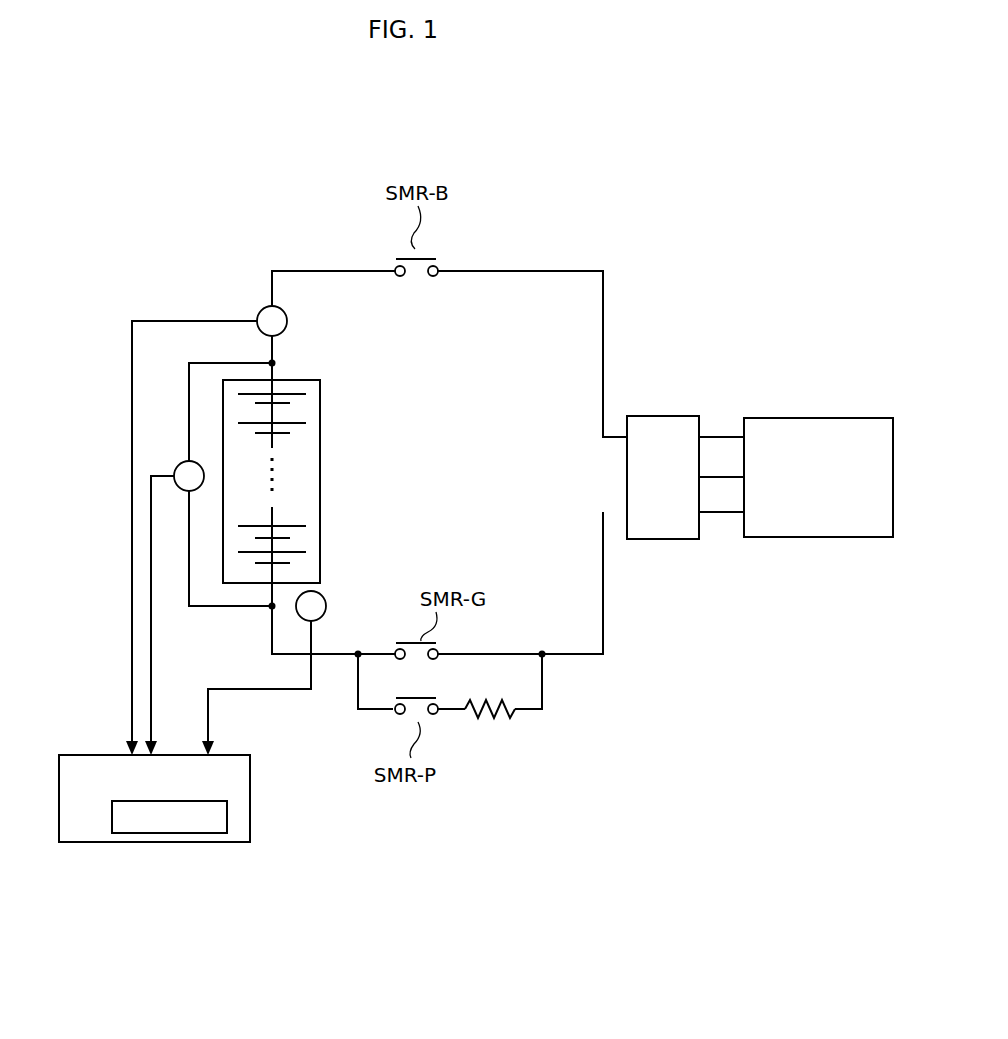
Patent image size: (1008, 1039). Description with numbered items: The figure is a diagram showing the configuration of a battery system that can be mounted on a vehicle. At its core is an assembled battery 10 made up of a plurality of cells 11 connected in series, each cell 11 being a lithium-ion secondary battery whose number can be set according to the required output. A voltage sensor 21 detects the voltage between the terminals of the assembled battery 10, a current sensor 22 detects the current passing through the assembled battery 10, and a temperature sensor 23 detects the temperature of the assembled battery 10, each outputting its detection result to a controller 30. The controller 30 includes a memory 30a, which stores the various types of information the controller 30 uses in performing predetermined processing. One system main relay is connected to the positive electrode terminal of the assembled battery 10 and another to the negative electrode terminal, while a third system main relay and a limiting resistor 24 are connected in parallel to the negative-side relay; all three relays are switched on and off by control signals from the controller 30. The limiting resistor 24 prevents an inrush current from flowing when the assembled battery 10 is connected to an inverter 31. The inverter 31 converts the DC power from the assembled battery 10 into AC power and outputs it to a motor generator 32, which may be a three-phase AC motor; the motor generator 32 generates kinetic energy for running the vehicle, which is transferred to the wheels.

The assembled battery 10 is at (320, 475).
The cell 11 is at (303, 400).
The voltage sensor 21 is at (178, 463).
The current sensor 22 is at (259, 310).
The temperature sensor 23 is at (326, 608).
The limiting resistor 24 is at (500, 722).
The controller 30 is at (130, 843).
The memory 30a is at (228, 816).
The inverter 31 is at (662, 541).
The motor generator 32 is at (818, 539).